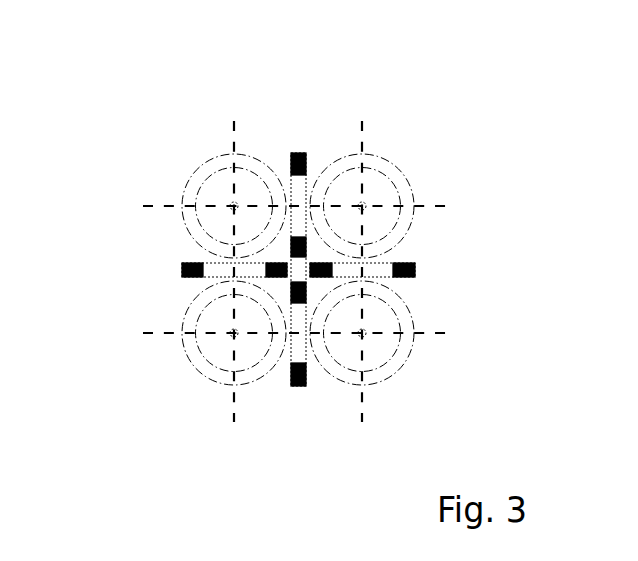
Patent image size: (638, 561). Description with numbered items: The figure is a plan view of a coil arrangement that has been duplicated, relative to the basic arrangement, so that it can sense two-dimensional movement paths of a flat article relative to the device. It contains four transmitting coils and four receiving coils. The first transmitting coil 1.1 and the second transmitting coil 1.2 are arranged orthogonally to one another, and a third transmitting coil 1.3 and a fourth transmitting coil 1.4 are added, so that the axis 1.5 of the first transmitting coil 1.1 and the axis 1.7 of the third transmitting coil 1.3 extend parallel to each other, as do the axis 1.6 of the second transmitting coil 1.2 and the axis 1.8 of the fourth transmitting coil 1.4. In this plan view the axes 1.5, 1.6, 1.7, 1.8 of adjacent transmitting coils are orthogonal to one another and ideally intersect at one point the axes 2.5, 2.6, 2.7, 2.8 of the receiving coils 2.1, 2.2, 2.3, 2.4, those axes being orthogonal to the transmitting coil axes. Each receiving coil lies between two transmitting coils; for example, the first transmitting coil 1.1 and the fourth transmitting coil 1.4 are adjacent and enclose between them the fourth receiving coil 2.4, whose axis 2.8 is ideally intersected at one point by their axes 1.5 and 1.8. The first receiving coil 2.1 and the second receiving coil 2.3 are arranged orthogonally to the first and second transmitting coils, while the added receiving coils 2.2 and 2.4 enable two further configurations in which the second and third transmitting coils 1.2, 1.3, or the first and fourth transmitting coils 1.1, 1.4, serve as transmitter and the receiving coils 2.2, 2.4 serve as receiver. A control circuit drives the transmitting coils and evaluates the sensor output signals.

The first transmitting coil 1.1 is at (298, 152).
The second transmitting coil 1.2 is at (412, 277).
The third transmitting coil 1.3 is at (302, 387).
The fourth transmitting coil 1.4 is at (182, 269).
The axis of the first transmitting coil 1.5 is at (425, 206).
The axis of the second transmitting coil 1.6 is at (362, 147).
The axis of the third transmitting coil 1.7 is at (165, 332).
The axis of the fourth transmitting coil 1.8 is at (235, 418).
The first receiving coil 2.1 is at (415, 214).
The third receiving coil 2.2 is at (394, 373).
The second receiving coil 2.3 is at (187, 352).
The fourth receiving coil 2.4 is at (185, 191).
The axis of the first receiving coil 2.5 is at (362, 206).
The axis of the receiving coil 2.6 is at (370, 333).
The axis of the receiving coil 2.7 is at (234, 333).
The axis of the fourth receiving coil 2.8 is at (234, 206).